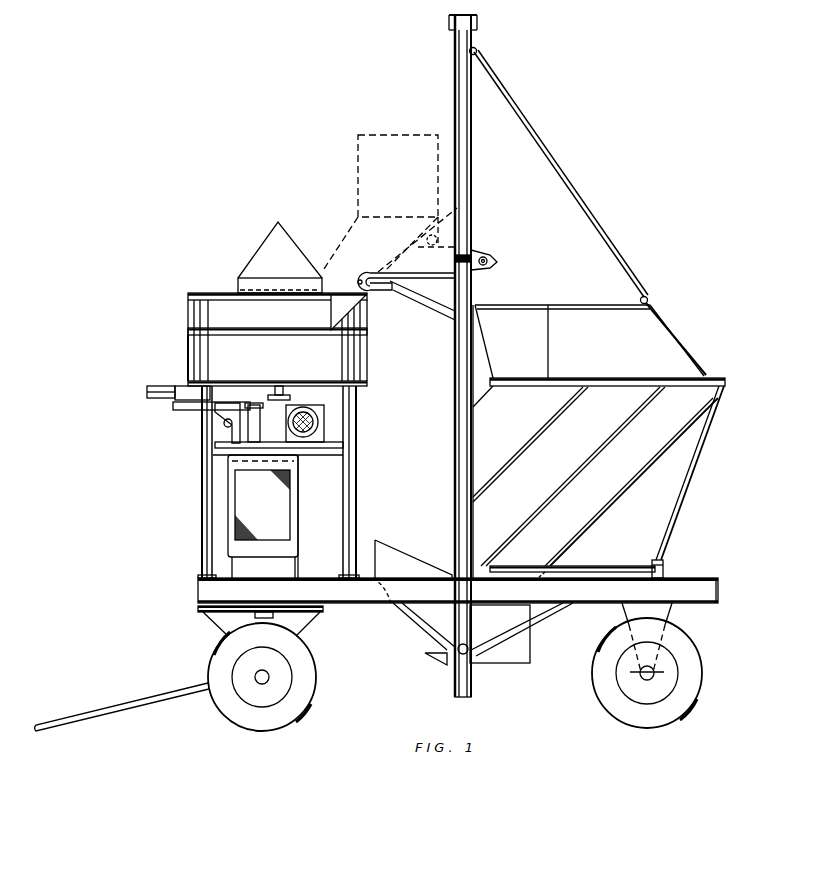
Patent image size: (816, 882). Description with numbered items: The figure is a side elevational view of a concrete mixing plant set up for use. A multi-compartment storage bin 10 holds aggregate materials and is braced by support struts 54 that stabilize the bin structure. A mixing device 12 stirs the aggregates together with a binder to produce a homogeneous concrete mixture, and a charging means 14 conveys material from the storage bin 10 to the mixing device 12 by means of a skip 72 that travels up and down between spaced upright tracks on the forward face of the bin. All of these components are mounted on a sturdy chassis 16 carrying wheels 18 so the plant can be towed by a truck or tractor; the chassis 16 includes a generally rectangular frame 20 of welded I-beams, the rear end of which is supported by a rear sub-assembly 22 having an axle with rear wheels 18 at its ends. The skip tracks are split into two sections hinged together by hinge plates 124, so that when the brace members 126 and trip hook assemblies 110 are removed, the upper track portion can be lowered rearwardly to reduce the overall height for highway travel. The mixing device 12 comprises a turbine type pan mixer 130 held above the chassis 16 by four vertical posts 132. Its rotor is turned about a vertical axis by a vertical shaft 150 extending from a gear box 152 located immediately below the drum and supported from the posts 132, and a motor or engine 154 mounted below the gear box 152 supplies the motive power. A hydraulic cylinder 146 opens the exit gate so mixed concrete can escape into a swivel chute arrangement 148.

The multi-compartment storage bin 10 is at (707, 374).
The mixing device 12 is at (186, 319).
The charging means 14 is at (446, 500).
The chassis 16 is at (195, 596).
The wheels 18 is at (303, 706).
The frame 20 is at (339, 601).
The rear sub-assembly 22 is at (674, 610).
The support struts 54 is at (676, 521).
The skip 72 is at (372, 135).
The trip hook assemblies 110 is at (350, 251).
The hinge plates 124 is at (492, 262).
The brace members 126 is at (576, 196).
The turbine type pan mixer 130 is at (200, 369).
The vertical posts 132 is at (350, 527).
The hydraulic cylinder 146 is at (157, 399).
The swivel chute arrangement 148 is at (232, 419).
The vertical shaft 150 is at (287, 393).
The gear box 152 is at (321, 421).
The motor or engine 154 is at (295, 507).